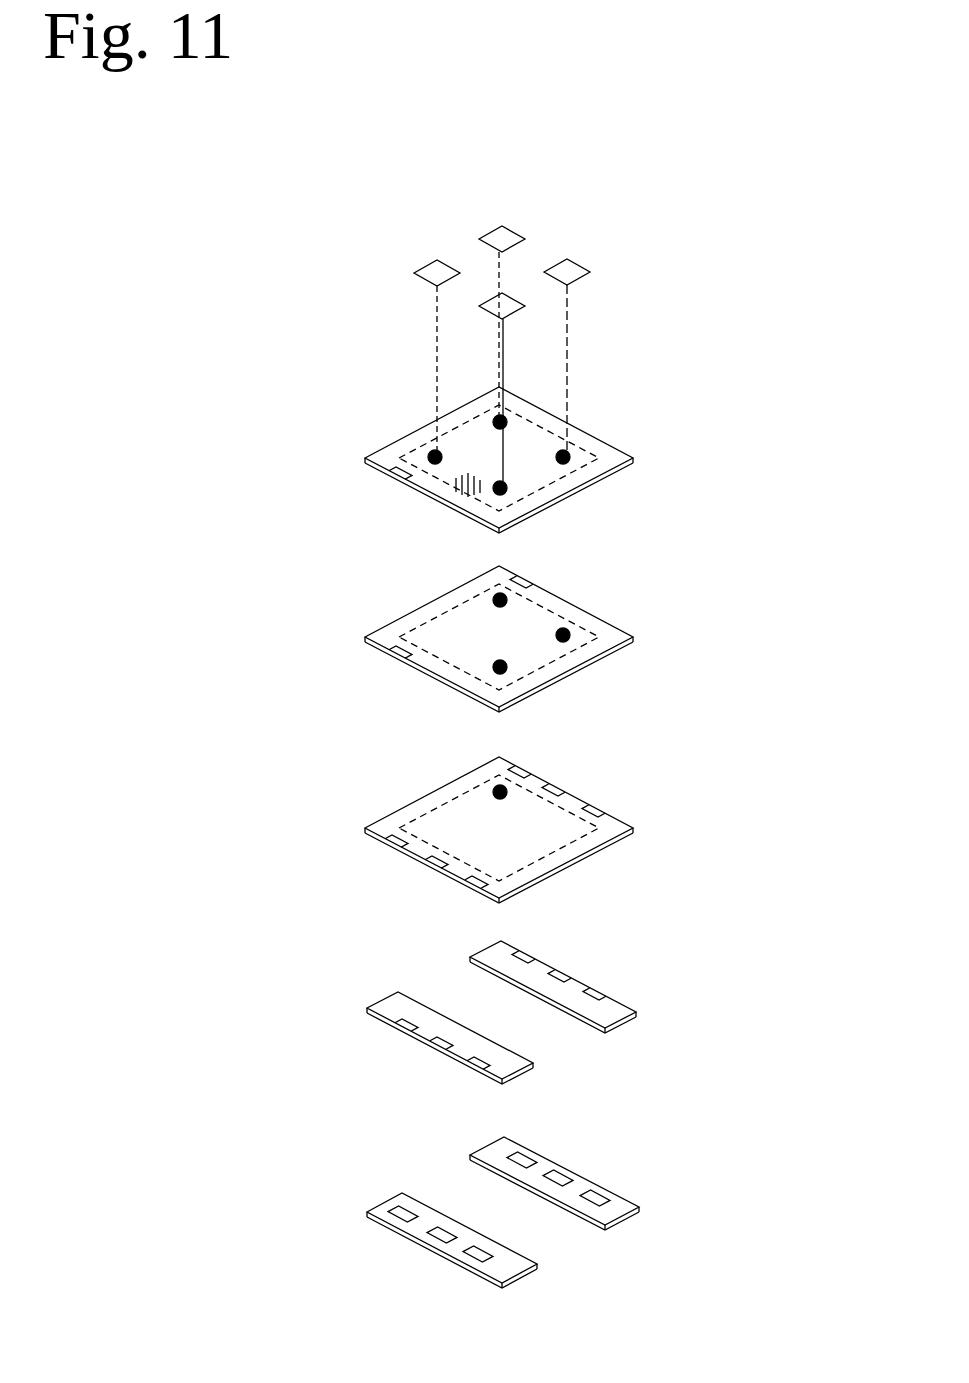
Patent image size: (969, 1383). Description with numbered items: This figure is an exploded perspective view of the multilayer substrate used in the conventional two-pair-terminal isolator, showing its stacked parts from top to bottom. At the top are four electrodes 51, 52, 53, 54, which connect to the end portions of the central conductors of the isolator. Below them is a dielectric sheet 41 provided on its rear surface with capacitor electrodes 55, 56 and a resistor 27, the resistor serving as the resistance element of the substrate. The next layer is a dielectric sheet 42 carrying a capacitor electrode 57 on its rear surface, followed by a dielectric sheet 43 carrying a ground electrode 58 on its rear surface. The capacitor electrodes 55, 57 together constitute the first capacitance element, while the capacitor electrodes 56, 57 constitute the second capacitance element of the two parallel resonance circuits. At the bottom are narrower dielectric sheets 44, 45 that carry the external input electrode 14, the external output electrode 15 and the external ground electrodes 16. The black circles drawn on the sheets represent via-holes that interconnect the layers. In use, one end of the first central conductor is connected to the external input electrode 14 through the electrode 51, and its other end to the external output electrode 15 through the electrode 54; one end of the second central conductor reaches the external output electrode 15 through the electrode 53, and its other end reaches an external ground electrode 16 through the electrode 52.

The external input electrode 14 is at (400, 1228).
The external output electrode 15 is at (523, 1155).
The external ground electrodes 16 is at (560, 1177).
The resistor 27 is at (460, 490).
The dielectric sheet 41 is at (613, 446).
The dielectric sheet 42 is at (610, 629).
The dielectric sheet 43 is at (615, 826).
The dielectric sheet 44 is at (380, 1002).
The dielectric sheet 45 is at (387, 1208).
The electrode 51 is at (427, 265).
The electrode 52 is at (492, 230).
The electrode 53 is at (522, 305).
The electrode 54 is at (580, 280).
The capacitor electrode 55 is at (452, 438).
The capacitor electrode 56 is at (500, 420).
The capacitor electrode 57 is at (545, 653).
The ground electrode 58 is at (545, 843).